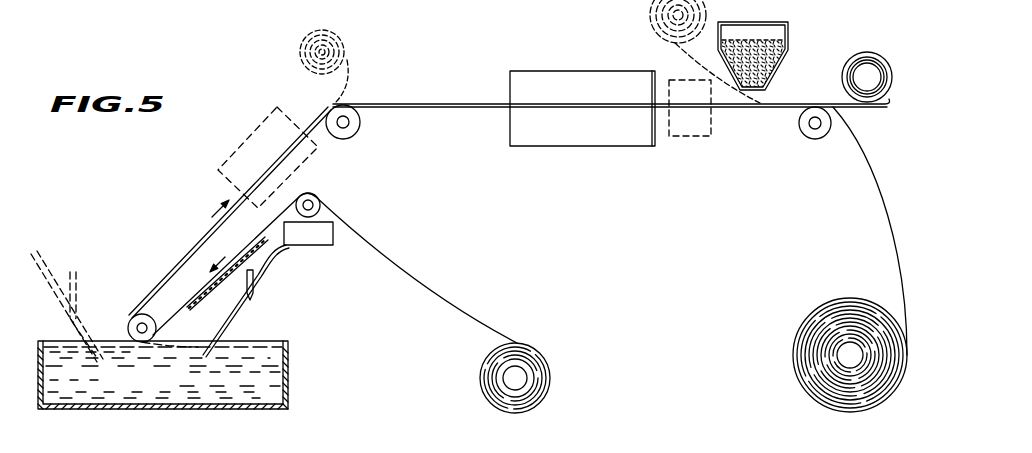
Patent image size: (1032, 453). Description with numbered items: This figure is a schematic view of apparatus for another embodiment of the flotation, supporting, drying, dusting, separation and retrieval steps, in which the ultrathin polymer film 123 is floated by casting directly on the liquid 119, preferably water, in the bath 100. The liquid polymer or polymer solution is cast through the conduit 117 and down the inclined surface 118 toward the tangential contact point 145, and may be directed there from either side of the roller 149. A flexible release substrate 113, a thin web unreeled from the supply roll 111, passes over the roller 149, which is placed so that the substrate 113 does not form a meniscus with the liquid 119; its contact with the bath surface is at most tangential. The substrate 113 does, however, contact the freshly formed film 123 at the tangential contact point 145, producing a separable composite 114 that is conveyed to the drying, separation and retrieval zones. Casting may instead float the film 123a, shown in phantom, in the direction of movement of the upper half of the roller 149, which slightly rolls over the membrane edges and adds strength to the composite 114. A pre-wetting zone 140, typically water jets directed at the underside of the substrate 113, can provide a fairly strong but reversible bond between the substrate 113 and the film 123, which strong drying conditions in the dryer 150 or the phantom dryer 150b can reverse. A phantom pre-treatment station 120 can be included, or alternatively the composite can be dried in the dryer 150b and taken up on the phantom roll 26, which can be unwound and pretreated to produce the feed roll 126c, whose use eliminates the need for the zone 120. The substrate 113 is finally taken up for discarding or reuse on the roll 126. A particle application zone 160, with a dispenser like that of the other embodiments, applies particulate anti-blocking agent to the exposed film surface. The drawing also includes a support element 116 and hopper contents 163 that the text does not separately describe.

The roll 26 is at (342, 38).
The bath 100 is at (276, 336).
The supply roll 111 is at (548, 385).
The flexible release substrate 113 is at (430, 290).
The separable composite 114 is at (192, 254).
The guide roller support 116 is at (330, 242).
The conduit 117 is at (277, 258).
The inclined surface 118 is at (256, 304).
The liquid 119 is at (253, 382).
The pre-treatment station 120 is at (694, 123).
The ultrathin polymer film 123 is at (874, 108).
The film 123a is at (120, 349).
The roll 126 is at (846, 310).
The feed roll 126c is at (655, 14).
The pre-wetting zone 140 is at (246, 258).
The tangential contact point 145 is at (142, 343).
The roller 149 is at (140, 318).
The dryer 150 is at (597, 130).
The dryer 150b is at (263, 127).
The particle application zone 160 is at (787, 42).
The coating material 163 is at (755, 65).